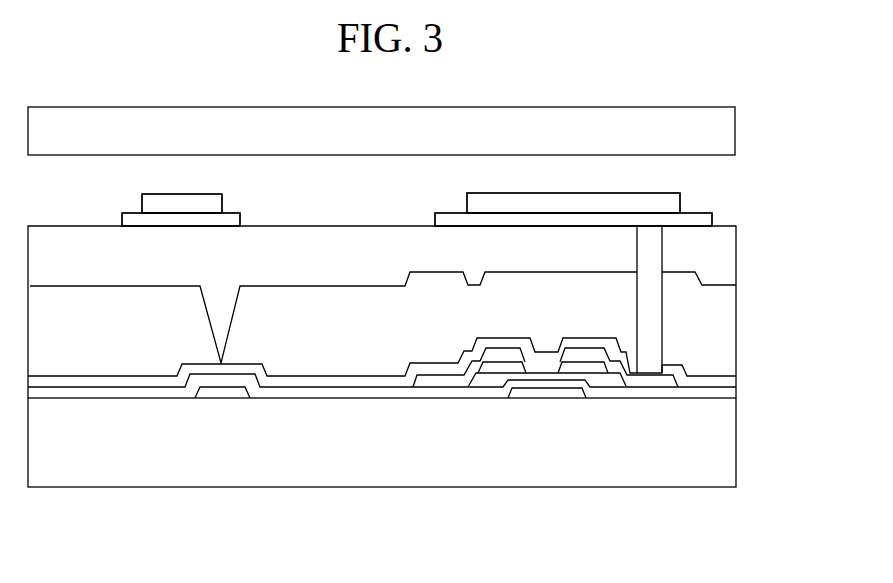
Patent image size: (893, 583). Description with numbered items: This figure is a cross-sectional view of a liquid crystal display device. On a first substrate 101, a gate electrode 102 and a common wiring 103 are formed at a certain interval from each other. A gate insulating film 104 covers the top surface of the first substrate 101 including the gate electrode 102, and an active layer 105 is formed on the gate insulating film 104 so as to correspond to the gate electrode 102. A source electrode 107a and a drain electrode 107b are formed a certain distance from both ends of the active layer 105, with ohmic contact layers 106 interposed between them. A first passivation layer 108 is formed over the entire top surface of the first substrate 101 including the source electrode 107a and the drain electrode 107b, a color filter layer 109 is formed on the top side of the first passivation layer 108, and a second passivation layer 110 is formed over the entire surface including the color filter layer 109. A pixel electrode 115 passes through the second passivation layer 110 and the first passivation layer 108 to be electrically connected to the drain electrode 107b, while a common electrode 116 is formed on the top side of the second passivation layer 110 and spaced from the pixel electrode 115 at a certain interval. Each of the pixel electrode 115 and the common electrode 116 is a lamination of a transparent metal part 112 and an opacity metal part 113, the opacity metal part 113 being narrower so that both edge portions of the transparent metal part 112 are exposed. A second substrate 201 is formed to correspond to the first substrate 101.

The first substrate 101 is at (736, 445).
The gate electrode 102 is at (548, 395).
The common wiring 103 is at (218, 395).
The gate insulating film 104 is at (736, 390).
The active layer 105 is at (490, 375).
The ohmic contact layer 106 is at (611, 378).
The source electrode 107a is at (438, 380).
The drain electrode 107b is at (657, 380).
The first passivation layer 108 is at (736, 380).
The color filter layer 109 is at (736, 316).
The second passivation layer 110 is at (736, 256).
The transparent metal part 112 is at (240, 222).
The opacity metal part 113 is at (222, 205).
The pixel electrode 115 is at (772, 182).
The common electrode 116 is at (302, 182).
The second substrate 201 is at (736, 130).